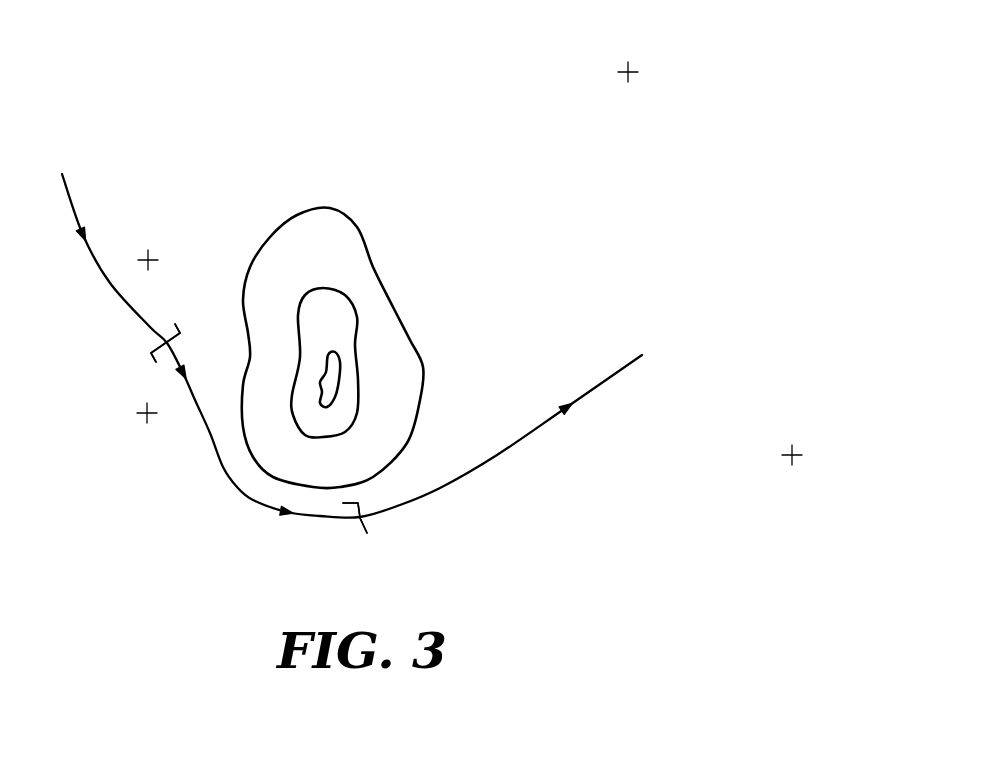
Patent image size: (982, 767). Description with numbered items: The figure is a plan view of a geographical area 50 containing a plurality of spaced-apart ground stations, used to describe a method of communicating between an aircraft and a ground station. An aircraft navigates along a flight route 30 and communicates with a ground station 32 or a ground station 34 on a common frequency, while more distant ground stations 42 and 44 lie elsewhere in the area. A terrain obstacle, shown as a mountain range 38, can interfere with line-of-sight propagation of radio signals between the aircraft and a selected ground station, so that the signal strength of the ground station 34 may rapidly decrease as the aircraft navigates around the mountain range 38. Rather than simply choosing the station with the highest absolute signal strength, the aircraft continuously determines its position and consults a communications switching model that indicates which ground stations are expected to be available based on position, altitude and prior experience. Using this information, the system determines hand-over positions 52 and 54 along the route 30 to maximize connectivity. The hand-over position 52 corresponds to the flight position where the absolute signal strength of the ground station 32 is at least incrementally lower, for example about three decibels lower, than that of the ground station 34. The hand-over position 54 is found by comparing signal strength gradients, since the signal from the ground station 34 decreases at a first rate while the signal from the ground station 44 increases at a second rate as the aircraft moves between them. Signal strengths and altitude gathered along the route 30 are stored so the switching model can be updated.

The flight route 30 is at (70, 190).
The ground station 32 is at (153, 257).
The ground station 34 is at (146, 416).
The mountain range 38 is at (383, 318).
The ground station 42 is at (629, 74).
The ground station 44 is at (795, 452).
The geographical area 50 is at (767, 87).
The hand-over position 52 is at (148, 340).
The hand-over position 54 is at (356, 518).